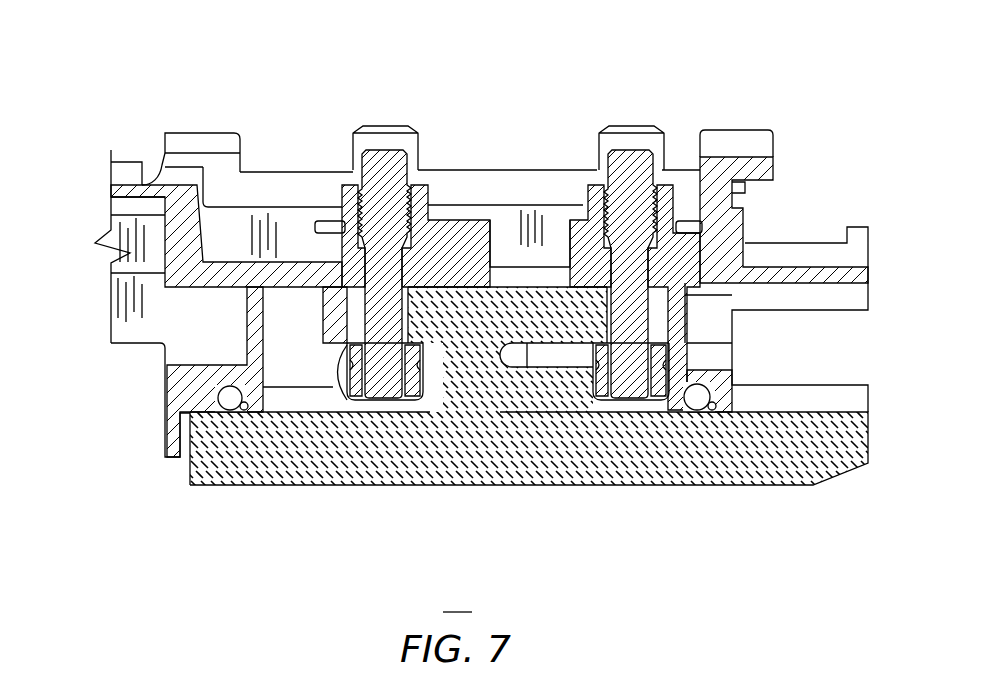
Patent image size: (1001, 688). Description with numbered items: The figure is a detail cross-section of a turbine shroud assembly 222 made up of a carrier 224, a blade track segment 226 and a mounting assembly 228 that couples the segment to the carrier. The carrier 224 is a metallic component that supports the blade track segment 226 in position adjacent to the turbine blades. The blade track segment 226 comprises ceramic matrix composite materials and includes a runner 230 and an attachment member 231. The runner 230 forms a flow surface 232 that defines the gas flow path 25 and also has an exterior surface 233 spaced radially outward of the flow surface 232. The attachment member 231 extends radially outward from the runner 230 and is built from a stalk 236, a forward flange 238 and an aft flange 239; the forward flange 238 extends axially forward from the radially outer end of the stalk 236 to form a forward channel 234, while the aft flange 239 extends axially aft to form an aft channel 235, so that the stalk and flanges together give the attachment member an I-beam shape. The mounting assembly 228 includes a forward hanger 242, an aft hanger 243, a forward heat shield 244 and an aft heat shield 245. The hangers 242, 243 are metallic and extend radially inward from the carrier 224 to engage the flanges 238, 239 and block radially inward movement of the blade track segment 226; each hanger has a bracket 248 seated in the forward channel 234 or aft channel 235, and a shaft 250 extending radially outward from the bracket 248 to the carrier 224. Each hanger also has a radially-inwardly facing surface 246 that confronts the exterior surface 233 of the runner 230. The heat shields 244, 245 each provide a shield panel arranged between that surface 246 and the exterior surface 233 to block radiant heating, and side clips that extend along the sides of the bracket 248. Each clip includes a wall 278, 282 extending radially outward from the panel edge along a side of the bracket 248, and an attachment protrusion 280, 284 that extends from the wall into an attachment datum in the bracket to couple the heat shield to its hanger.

The shroud assembly 222 is at (115, 118).
The carrier 224 is at (298, 165).
The forward hanger 242 is at (383, 112).
The aft hanger 243 is at (627, 112).
The forward flange 238 is at (443, 220).
The attachment member 231 is at (448, 250).
The mounting assembly 228 is at (518, 168).
The aft flange 239 is at (523, 287).
The bracket 248 is at (682, 333).
The aft heat shield 245 is at (684, 370).
The shaft 250 is at (350, 272).
The wall 278 is at (347, 344).
The attachment protrusion 280 is at (335, 373).
The forward heat shield 244 is at (335, 322).
The blade track segment 226 is at (268, 565).
The exterior surface 233 is at (375, 400).
The radially-inwardly facing surface 246 is at (395, 398).
The attachment protrusion 284 is at (590, 356).
The stalk 236 is at (440, 345).
The flow surface 232 is at (462, 420).
The aft channel 235 is at (510, 385).
The wall 282 is at (528, 360).
The runner 230 is at (385, 515).
The forward channel 234 is at (425, 415).
The gas flow path 25 is at (457, 600).